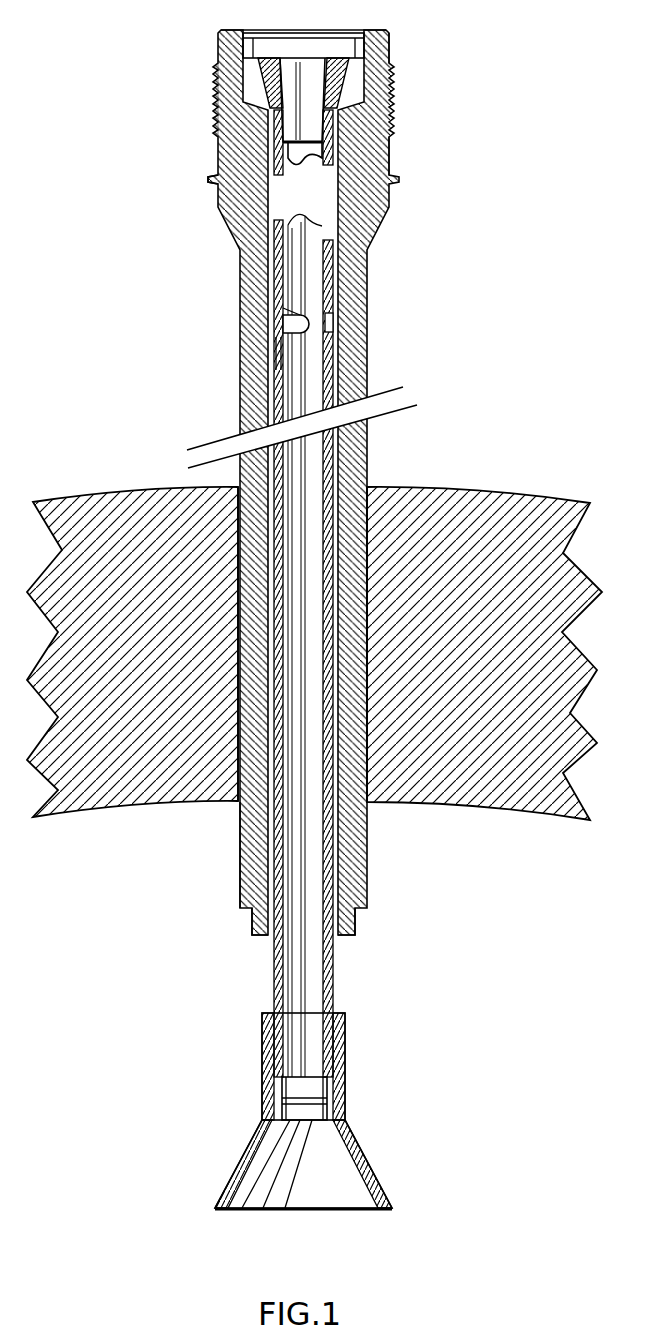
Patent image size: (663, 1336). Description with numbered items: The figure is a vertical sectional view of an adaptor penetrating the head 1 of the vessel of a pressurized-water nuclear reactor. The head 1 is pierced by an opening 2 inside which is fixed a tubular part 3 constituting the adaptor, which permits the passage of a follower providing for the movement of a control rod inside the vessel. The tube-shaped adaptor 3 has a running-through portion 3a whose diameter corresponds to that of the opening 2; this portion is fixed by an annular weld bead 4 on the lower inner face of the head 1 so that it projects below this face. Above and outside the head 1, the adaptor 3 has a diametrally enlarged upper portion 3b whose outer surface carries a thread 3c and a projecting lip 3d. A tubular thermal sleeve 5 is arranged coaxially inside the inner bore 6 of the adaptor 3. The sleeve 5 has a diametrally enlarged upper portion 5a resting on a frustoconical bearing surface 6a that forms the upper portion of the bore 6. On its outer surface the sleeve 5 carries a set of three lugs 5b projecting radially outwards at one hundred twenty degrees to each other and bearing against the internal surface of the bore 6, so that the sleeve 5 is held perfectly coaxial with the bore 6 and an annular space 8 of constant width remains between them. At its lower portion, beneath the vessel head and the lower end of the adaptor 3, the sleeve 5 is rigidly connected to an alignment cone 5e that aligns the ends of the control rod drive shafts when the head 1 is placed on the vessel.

The head 1 is at (102, 518).
The opening 2 is at (238, 527).
The tubular part 3 is at (245, 267).
The running-through portion 3a is at (353, 862).
The diametrally enlarged upper portion 3b is at (370, 138).
The thread 3c is at (215, 130).
The lip 3d is at (212, 180).
The annular weld bead 4 is at (238, 802).
The tubular thermal sleeve 5 is at (330, 355).
The diametrally enlarged upper portion 5a is at (347, 85).
The lugs 5b is at (277, 337).
The alignment cone 5e is at (232, 1180).
The inner bore 6 is at (318, 203).
The frustoconical bearing surface 6a is at (268, 98).
The annular space 8 is at (347, 485).